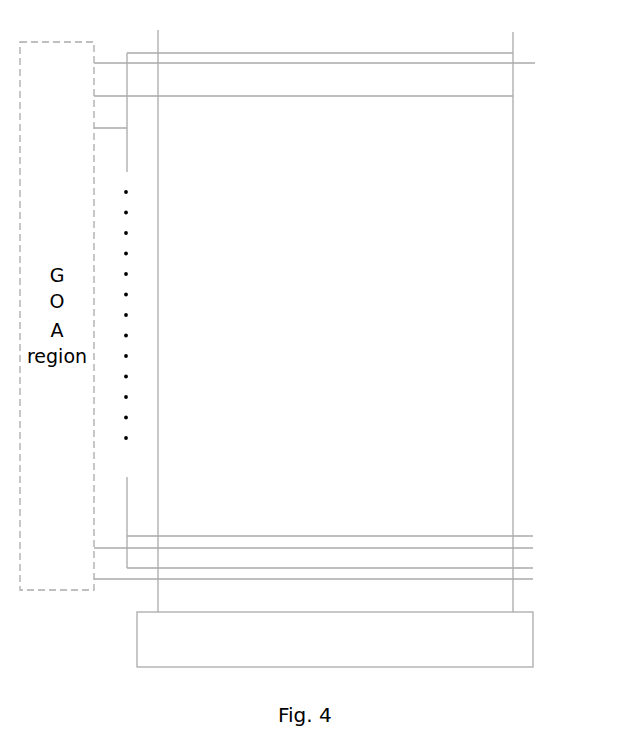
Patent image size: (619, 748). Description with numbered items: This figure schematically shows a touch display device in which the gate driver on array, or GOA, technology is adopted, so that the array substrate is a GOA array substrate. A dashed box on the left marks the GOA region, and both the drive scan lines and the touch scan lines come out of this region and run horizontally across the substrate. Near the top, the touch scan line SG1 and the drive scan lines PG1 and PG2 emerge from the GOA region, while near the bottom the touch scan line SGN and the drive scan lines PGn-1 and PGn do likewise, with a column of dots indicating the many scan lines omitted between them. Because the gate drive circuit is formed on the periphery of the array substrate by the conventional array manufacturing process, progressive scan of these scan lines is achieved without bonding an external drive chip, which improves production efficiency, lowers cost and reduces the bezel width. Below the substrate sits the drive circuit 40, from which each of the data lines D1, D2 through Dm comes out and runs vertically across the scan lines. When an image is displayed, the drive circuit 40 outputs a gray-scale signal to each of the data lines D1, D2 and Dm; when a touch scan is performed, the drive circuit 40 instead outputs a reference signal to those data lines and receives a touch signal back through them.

The drive circuit 40 is at (520, 638).
The data line D1 is at (159, 310).
The data line D2 is at (190, 18).
The data line Dm is at (515, 310).
The touch scan line SG1 is at (334, 65).
The drive scan line PG1 is at (333, 63).
The drive scan line PG2 is at (325, 113).
The touch scan line SGN is at (348, 547).
The drive scan line PGn-1 is at (338, 548).
The drive scan line PGn is at (328, 590).